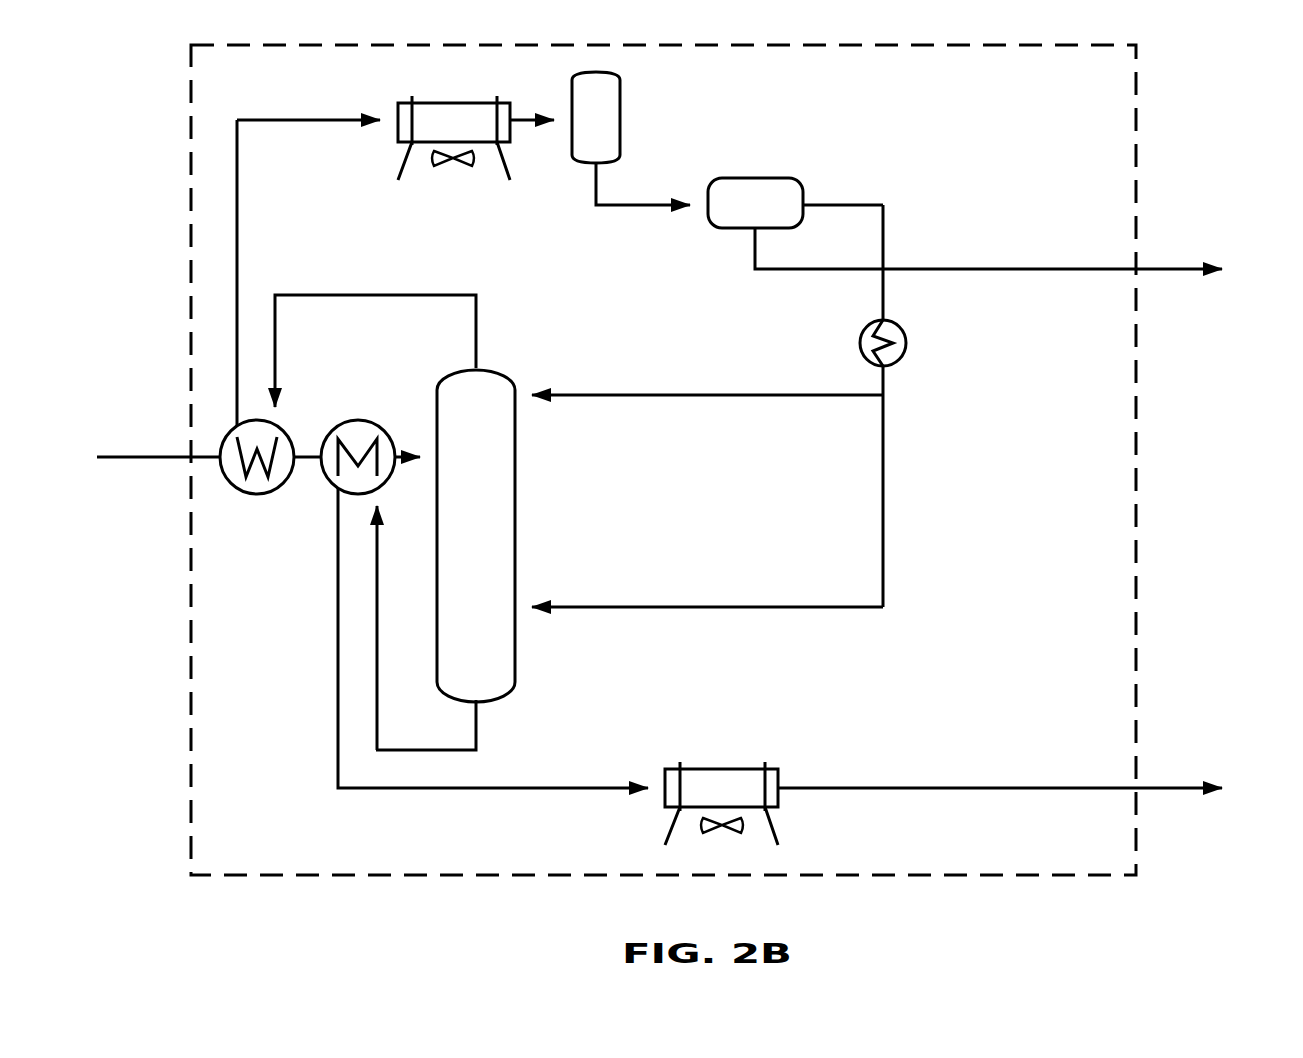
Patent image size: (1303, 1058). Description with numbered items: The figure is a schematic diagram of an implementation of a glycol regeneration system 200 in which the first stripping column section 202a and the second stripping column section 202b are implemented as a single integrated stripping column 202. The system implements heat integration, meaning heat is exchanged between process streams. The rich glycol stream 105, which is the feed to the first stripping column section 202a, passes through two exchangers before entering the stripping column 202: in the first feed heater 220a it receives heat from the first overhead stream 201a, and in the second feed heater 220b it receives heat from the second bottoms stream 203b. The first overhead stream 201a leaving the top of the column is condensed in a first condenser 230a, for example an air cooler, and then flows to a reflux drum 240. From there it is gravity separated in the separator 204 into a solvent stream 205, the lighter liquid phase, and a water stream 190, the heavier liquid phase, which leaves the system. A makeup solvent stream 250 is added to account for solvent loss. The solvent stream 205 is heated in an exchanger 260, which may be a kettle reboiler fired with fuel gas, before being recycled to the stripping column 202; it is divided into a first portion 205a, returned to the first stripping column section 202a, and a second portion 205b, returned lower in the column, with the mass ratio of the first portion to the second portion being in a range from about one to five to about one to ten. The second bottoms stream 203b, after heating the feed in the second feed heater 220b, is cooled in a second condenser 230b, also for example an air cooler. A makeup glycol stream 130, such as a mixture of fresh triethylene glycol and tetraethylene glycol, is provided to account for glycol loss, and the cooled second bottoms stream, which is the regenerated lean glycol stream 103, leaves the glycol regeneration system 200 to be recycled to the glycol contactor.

The glycol regeneration system 200 is at (1000, 877).
The rich glycol stream 105 is at (118, 459).
The first feed heater 220a is at (283, 428).
The second feed heater 220b is at (332, 483).
The first overhead stream 201a is at (476, 330).
The stripping column 202 is at (532, 538).
The first stripping column section 202a is at (515, 438).
The second stripping column section 202b is at (515, 643).
The second bottoms stream 203b is at (476, 728).
The first portion 205a is at (725, 395).
The second portion 205b is at (725, 607).
The solvent stream 205 is at (883, 228).
The exchanger 260 is at (906, 343).
The water stream 190 is at (1163, 271).
The makeup solvent stream 250 is at (883, 203).
The separator 204 is at (765, 178).
The reflux drum 240 is at (620, 125).
The first condenser 230a is at (398, 142).
The second condenser 230b is at (730, 769).
The regenerated lean glycol stream 103 is at (1163, 790).
The makeup glycol stream 130 is at (883, 786).